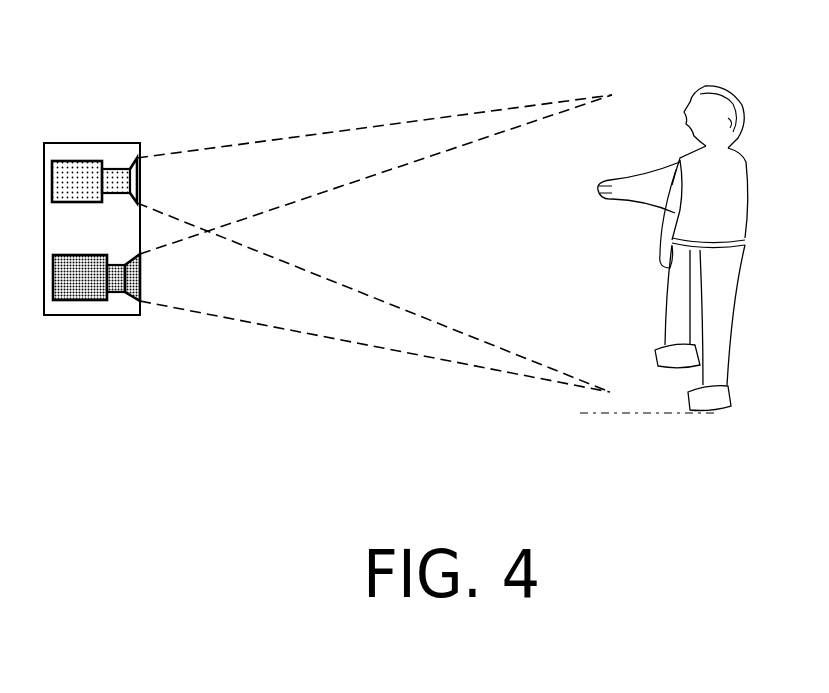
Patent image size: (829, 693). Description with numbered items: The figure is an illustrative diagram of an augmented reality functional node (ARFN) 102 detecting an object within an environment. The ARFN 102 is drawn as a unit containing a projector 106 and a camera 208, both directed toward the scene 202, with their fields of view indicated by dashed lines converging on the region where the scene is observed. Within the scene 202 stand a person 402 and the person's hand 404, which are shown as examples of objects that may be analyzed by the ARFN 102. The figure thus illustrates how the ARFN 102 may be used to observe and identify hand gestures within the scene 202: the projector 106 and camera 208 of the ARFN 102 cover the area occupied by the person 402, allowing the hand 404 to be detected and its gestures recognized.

The augmented reality functional node 102 is at (67, 298).
The projector 106 is at (75, 180).
The camera 208 is at (97, 300).
The scene 202 is at (551, 67).
The person 402 is at (723, 158).
The hand 404 is at (601, 187).